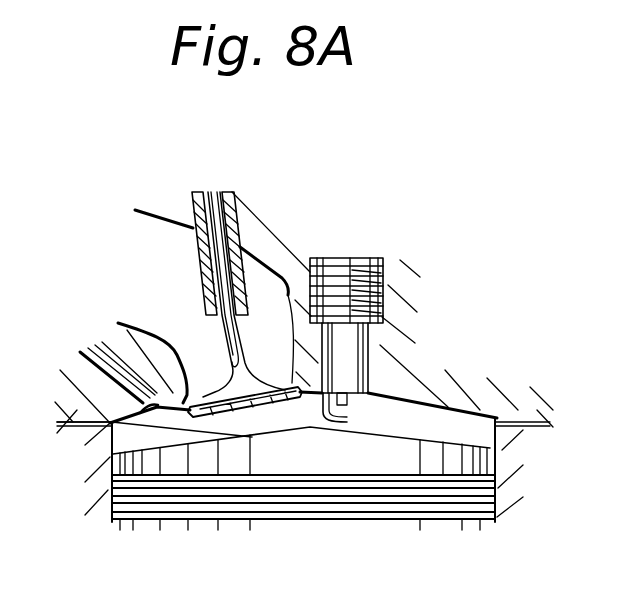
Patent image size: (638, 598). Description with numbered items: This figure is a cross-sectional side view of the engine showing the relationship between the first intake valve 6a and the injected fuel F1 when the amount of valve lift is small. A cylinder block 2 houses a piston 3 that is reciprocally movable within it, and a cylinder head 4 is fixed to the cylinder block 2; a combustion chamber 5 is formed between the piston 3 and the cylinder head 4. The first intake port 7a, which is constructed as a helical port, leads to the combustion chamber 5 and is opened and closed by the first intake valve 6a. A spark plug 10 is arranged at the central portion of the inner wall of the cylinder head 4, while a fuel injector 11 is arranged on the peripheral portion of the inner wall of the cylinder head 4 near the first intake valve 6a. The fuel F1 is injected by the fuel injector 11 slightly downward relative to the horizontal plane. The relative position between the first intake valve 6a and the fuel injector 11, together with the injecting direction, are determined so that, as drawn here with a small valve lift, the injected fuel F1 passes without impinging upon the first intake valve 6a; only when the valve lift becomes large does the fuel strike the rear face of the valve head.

The first intake port 7a is at (192, 227).
The first intake valve 6a is at (240, 330).
The spark plug 10 is at (358, 265).
The fuel injector 11 is at (100, 350).
The cylinder head 4 is at (476, 392).
The combustion chamber 5 is at (122, 440).
The cylinder block 2 is at (515, 485).
The piston 3 is at (448, 523).
The injected fuel F1 is at (212, 430).